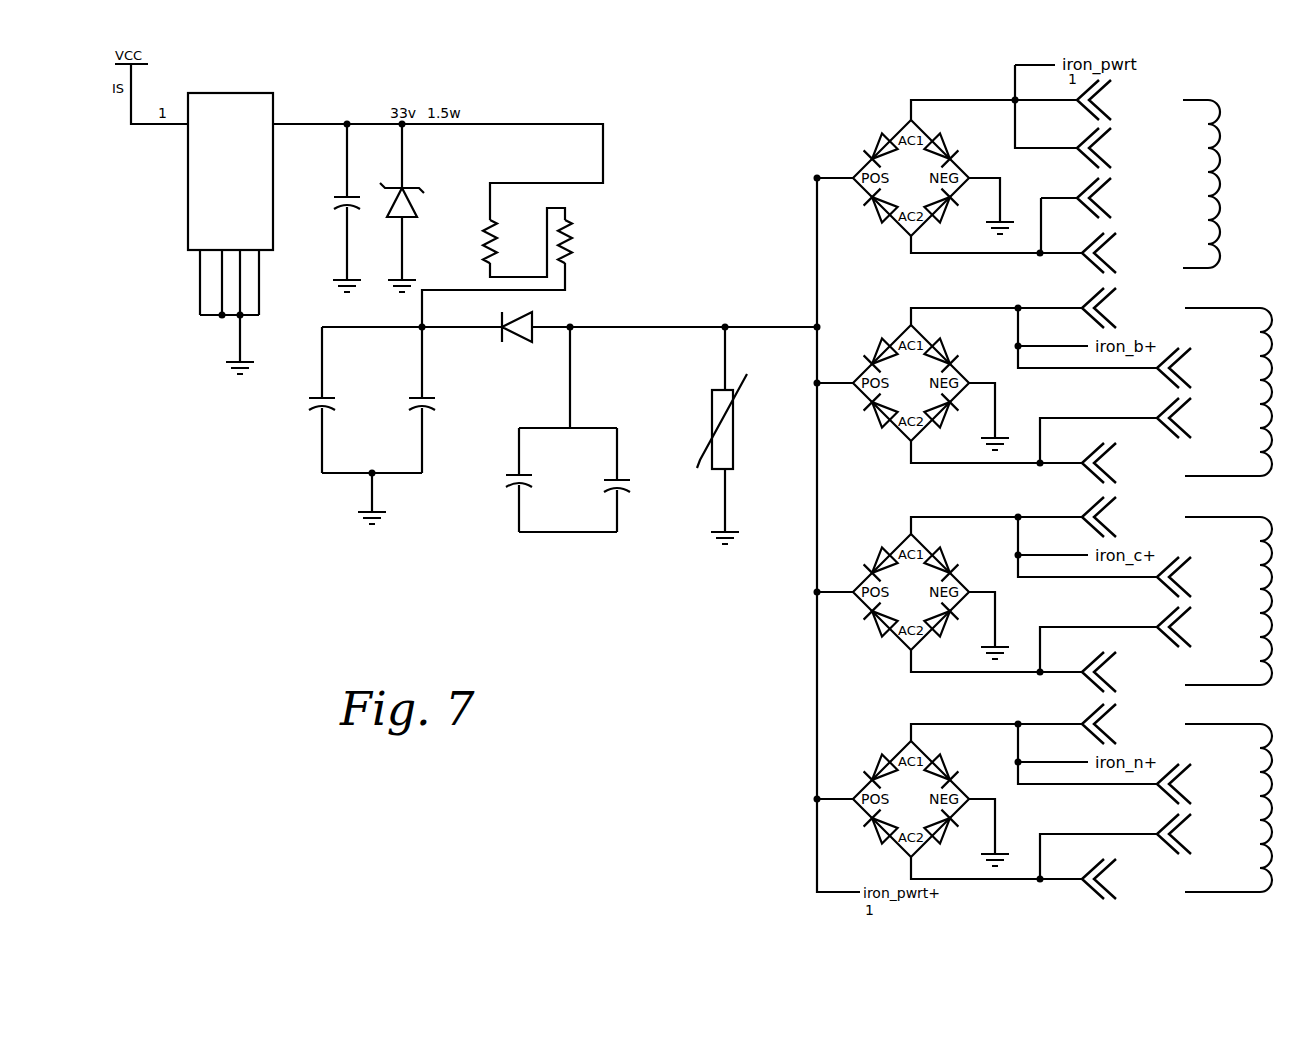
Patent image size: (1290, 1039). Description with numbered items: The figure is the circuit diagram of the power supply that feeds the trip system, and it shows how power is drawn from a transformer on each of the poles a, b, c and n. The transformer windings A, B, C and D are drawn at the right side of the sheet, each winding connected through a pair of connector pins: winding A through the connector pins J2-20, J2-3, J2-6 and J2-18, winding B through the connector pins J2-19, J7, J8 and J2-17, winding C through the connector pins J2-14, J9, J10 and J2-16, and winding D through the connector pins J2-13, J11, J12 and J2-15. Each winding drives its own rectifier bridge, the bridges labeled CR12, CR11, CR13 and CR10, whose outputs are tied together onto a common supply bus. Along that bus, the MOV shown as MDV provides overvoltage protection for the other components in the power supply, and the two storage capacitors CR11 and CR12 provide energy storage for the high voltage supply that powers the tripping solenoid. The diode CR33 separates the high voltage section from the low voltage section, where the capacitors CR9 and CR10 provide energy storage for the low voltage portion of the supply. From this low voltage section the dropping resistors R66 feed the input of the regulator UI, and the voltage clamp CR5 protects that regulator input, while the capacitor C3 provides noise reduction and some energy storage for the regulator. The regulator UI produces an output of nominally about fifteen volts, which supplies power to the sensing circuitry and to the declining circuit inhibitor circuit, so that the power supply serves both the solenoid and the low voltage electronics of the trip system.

The regulator UI is at (241, 224).
The capacitor C3 is at (331, 208).
The voltage clamp CR5 is at (428, 208).
The dropping resistor R66 is at (546, 242).
The storage capacitor CR10 is at (646, 601).
The storage capacitor CR9 is at (451, 400).
The diode IN4005 CR33 is at (517, 349).
The storage capacitor CR11 is at (745, 421).
The storage capacitor CR12 is at (795, 318).
The bridge rectifier DF06S CR13 is at (903, 593).
The MOV MDV is at (751, 435).
The connector pin iron_a+ J2-20 is at (1112, 101).
The connector pin iron_a+ J2-3 is at (1118, 149).
The connector pin iron_a- J2-6 is at (1113, 199).
The connector pin iron_a- J2-18 is at (1117, 255).
The connector pin iron_b+ J2-19 is at (1121, 311).
The connector iron_b+ J7 is at (1175, 369).
The connector iron_b- J8 is at (1193, 419).
The connector pin iron_b- J2-17 is at (1117, 466).
The connector pin iron_c+ J2-14 is at (1120, 520).
The connector iron_c+ J9 is at (1175, 578).
The connector iron_c- J10 is at (1192, 628).
The connector pin iron_c- J2-16 is at (1116, 675).
The connector pin iron_n+ J2-13 is at (1121, 727).
The connector iron_n+ J11 is at (1175, 785).
The connector iron_n- J12 is at (1193, 835).
The connector pin iron_n- J2-15 is at (1117, 882).
The transformer A is at (1211, 184).
The transformer B is at (1235, 392).
The transformer C is at (1235, 601).
The transformer D is at (1236, 808).